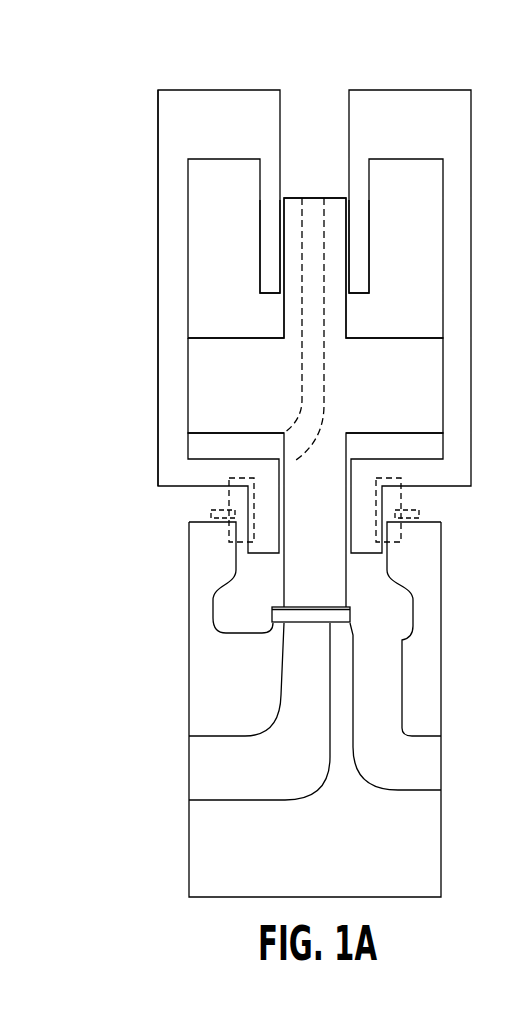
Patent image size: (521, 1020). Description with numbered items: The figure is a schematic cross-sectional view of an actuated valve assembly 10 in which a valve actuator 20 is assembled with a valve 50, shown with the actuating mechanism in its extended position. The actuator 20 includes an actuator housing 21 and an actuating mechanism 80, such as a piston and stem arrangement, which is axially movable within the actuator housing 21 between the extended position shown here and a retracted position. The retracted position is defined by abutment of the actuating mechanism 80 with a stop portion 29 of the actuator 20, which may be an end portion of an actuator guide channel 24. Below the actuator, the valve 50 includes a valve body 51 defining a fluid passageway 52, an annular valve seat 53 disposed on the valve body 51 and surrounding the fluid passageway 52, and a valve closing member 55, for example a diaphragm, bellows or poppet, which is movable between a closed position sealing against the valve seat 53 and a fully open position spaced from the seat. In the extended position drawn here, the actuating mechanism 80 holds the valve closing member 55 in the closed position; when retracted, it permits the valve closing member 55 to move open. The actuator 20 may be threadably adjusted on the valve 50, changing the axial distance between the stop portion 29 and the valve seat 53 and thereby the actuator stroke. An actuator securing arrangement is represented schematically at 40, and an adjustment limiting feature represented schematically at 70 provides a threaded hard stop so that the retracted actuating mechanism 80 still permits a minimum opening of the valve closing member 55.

The actuated valve assembly 10 is at (110, 450).
The valve actuator 20 is at (134, 272).
The actuator housing 21 is at (158, 347).
The actuator guide channel 24 is at (358, 263).
The stop portion 29 is at (270, 293).
The actuating mechanism 80 is at (237, 390).
The actuator securing arrangement 40 is at (233, 514).
The adjustment limiting feature 70 is at (211, 513).
The valve 50 is at (155, 690).
The valve body 51 is at (215, 662).
The fluid passageway 52 is at (217, 736).
The annular valve seat 53 is at (355, 628).
The valve closing member 55 is at (352, 600).